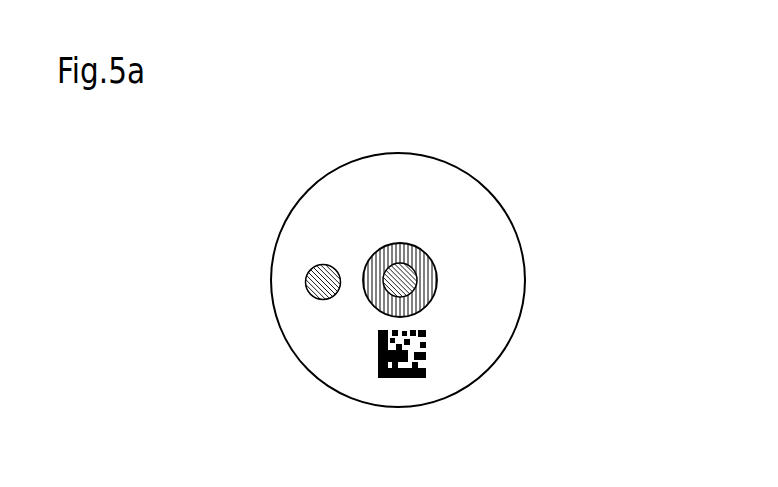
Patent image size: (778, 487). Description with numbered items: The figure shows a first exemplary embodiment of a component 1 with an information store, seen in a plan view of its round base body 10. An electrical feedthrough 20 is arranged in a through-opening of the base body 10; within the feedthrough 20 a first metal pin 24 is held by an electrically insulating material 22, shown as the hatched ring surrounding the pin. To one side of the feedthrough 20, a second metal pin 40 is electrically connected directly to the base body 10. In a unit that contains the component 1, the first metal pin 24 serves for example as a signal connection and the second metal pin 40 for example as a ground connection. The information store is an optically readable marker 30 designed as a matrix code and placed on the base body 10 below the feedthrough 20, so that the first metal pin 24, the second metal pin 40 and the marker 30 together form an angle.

The component 1 is at (630, 133).
The base body 10 is at (515, 280).
The electrical feedthrough 20 is at (438, 230).
The electrically insulating material 22 is at (366, 254).
The first metal pin 24 is at (393, 262).
The optically readable marker 30 is at (422, 357).
The second metal pin 40 is at (305, 282).